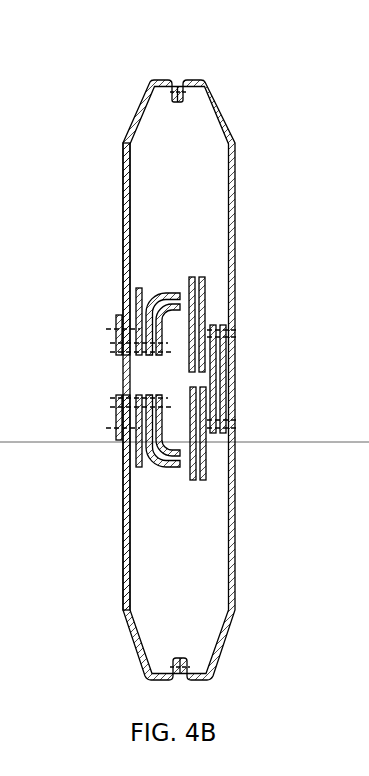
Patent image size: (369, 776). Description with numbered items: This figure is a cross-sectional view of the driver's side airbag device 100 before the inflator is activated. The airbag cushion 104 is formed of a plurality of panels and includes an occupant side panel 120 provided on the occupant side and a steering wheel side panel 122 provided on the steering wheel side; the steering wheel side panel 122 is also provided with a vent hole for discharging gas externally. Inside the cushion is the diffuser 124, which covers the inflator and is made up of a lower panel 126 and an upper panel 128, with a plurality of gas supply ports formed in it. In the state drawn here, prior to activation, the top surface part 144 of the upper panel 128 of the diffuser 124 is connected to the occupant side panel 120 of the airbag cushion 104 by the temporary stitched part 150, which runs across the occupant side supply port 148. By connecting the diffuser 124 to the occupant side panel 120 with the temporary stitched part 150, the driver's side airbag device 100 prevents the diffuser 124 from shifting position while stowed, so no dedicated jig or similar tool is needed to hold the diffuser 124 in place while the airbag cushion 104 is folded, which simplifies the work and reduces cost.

The driver's side airbag device 100 is at (79, 85).
The airbag cushion 104 is at (202, 79).
The occupant side panel 120 is at (236, 188).
The steering wheel side panel 122 is at (123, 193).
The diffuser 124 is at (192, 277).
The lower panel 126 is at (168, 292).
The upper panel 128 is at (202, 277).
The top surface part 144 is at (213, 457).
The occupant side supply port 148 is at (212, 380).
The temporary stitched part 150 is at (237, 378).